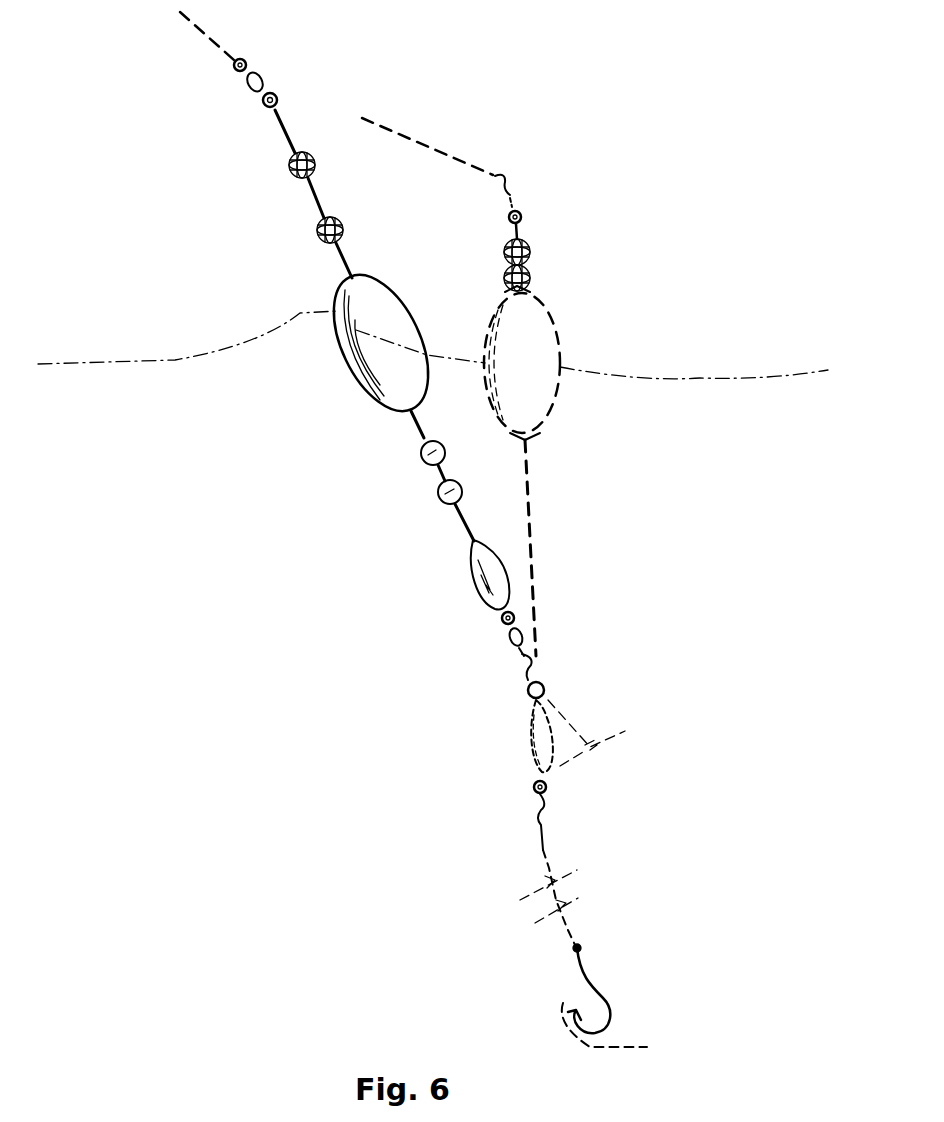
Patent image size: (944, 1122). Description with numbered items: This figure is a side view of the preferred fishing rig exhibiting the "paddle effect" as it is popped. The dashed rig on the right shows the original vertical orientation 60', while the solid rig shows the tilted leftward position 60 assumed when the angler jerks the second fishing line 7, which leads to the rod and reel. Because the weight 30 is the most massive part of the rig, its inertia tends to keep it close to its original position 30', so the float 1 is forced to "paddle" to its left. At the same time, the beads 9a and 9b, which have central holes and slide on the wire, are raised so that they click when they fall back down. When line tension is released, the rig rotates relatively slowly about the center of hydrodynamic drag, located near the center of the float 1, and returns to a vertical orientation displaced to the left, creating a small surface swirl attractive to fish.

The float 1 is at (370, 311).
The second fishing line 7 is at (210, 35).
The beads 9a is at (440, 497).
The beads 9b is at (320, 233).
The weight 30 is at (407, 590).
The original position of weight 30' is at (631, 778).
The leftward position of rig 60 is at (345, 553).
The original vertical position of rig 60' is at (545, 387).